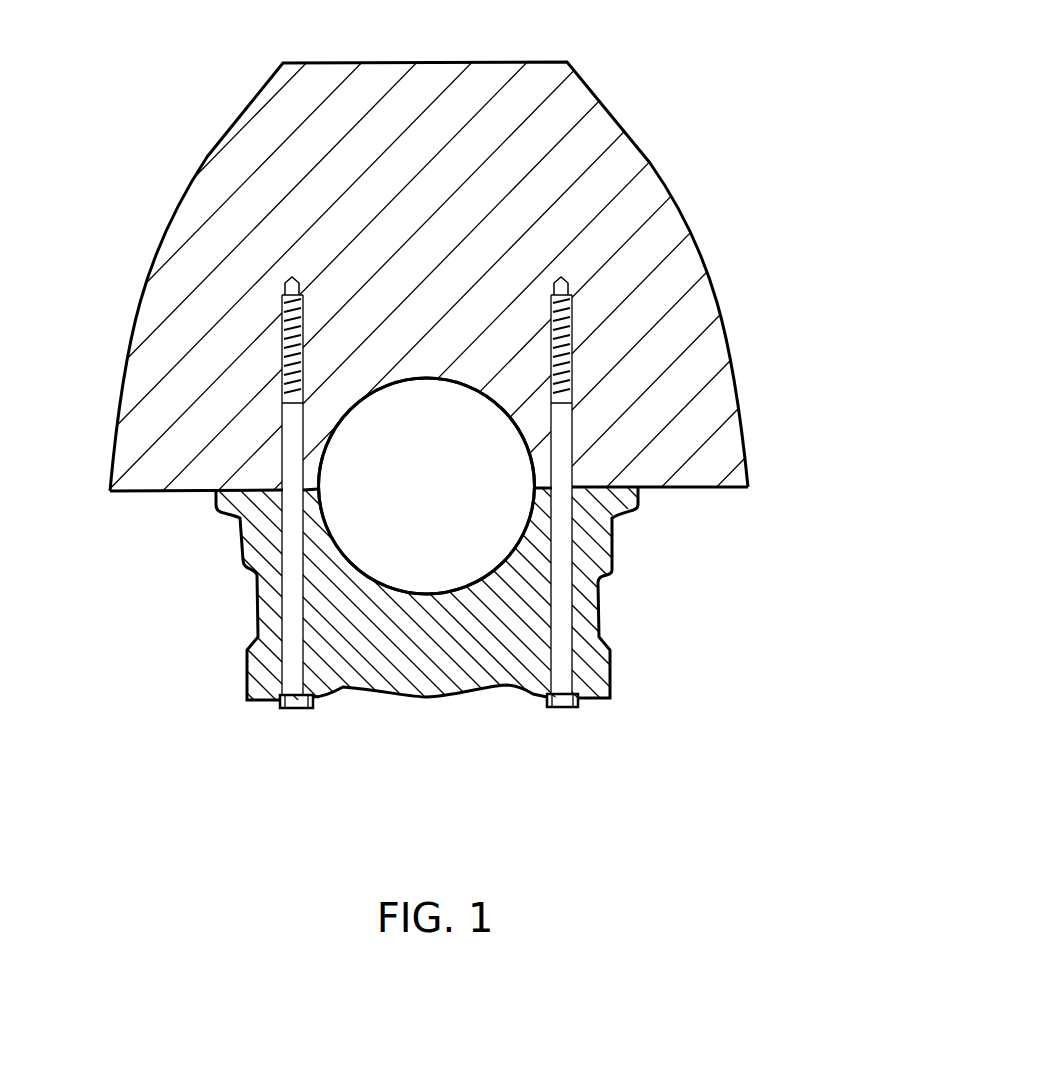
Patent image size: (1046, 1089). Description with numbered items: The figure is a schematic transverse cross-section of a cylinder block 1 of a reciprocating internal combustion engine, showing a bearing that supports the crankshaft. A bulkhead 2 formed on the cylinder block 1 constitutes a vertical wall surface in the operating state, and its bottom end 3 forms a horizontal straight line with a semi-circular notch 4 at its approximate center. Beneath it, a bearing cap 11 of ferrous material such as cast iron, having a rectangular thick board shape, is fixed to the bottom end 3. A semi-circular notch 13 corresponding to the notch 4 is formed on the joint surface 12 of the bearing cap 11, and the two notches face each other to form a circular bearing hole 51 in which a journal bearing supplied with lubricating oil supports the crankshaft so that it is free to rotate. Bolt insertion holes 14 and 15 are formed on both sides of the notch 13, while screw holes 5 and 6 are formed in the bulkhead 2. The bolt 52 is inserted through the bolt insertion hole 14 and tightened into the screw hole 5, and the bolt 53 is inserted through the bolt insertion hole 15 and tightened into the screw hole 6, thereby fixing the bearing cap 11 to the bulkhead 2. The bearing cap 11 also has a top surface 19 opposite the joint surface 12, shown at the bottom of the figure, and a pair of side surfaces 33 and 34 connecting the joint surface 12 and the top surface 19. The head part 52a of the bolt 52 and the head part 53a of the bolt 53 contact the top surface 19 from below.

The cylinder block 1 is at (523, 420).
The bulkhead 2 is at (640, 262).
The bottom end 3 is at (707, 490).
The semi-circular notch 4 is at (378, 410).
The screw hole 5 is at (290, 378).
The screw hole 6 is at (573, 350).
The bearing cap 11 is at (220, 658).
The joint surface 12 is at (590, 485).
The semi-circular notch 13 is at (458, 580).
The bolt insertion hole 14 is at (287, 543).
The bolt insertion hole 15 is at (570, 565).
The top surface 19 is at (443, 700).
The side surface 33 is at (258, 615).
The side surface 34 is at (600, 613).
The bearing hole 51 is at (405, 517).
The bolt 52 is at (287, 512).
The head part 52a is at (295, 708).
The bolt 53 is at (563, 525).
The head part 53a is at (565, 707).